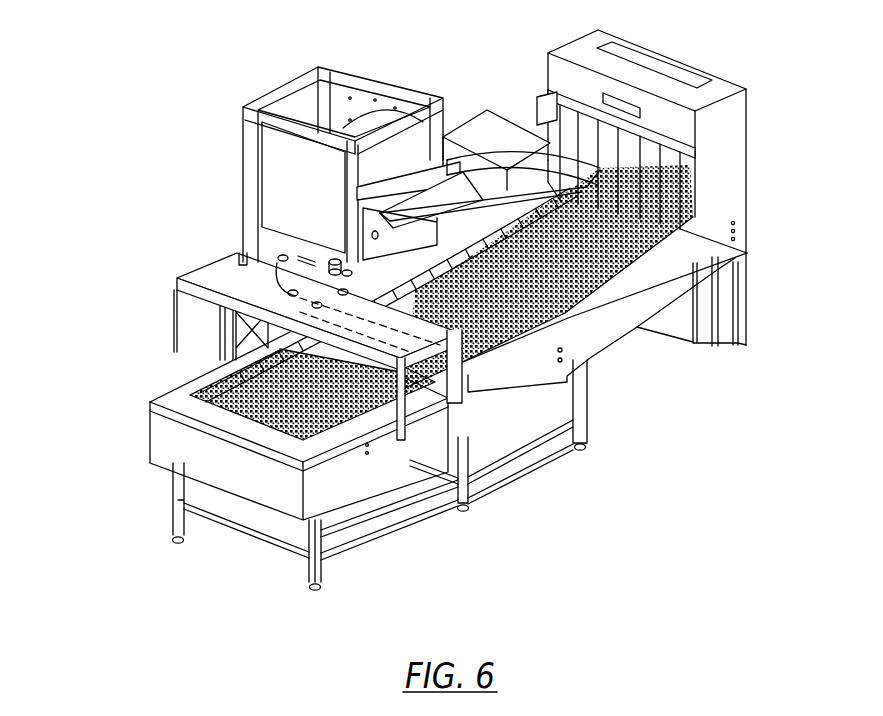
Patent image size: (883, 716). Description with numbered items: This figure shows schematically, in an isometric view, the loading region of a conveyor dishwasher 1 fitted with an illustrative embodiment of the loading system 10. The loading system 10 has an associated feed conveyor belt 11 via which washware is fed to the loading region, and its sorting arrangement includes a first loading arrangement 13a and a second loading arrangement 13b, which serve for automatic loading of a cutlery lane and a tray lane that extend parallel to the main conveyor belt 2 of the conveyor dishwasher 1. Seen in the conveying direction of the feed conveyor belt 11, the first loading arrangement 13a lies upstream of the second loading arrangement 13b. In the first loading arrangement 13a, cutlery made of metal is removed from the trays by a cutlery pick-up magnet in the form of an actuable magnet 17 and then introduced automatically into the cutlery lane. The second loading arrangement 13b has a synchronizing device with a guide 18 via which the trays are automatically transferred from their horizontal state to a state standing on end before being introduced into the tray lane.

The loading system 10 is at (90, 88).
The conveyor dishwasher 1 is at (733, 172).
The main conveyor belt 2 is at (327, 420).
The feed conveyor belt 11 is at (455, 330).
The first loading arrangement 13a is at (275, 72).
The second loading arrangement 13b is at (435, 35).
The actuable magnet 17 is at (383, 186).
The guide 18 is at (498, 185).